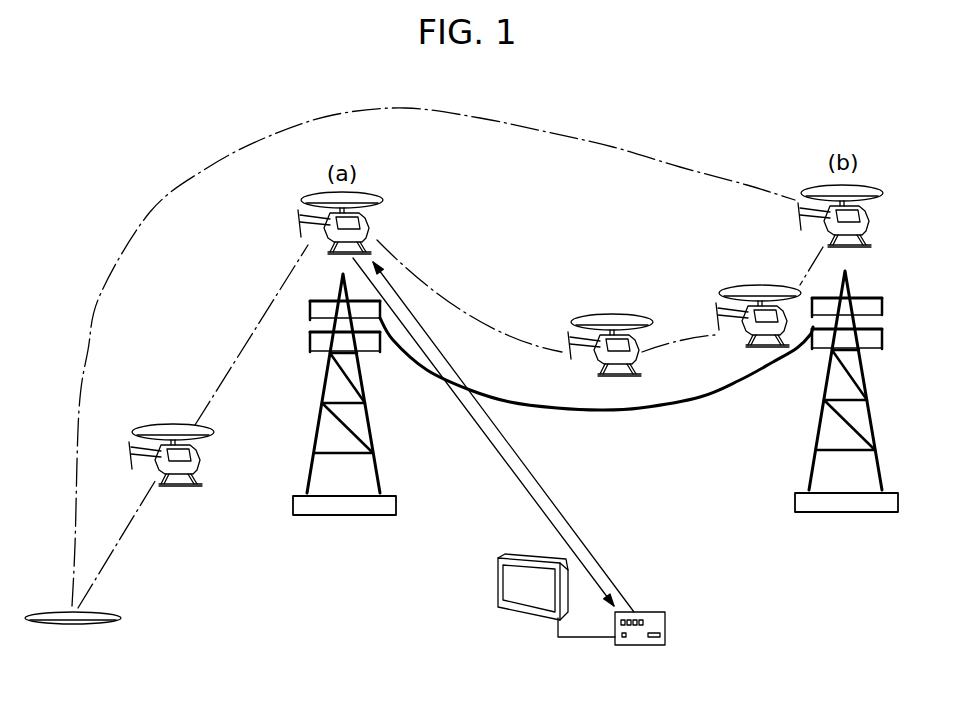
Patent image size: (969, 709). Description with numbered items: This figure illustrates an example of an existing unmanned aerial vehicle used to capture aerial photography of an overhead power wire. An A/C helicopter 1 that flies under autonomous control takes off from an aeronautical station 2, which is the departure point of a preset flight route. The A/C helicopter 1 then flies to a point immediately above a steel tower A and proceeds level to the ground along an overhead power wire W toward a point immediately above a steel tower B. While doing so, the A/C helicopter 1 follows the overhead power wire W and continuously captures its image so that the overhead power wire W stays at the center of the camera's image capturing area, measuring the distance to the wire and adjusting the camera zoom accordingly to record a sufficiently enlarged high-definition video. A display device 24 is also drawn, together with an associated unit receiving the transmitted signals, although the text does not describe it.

The A/C helicopter 1 is at (197, 458).
The aeronautical station 2 is at (122, 619).
The display device 24 is at (513, 612).
The overhead power wire W is at (700, 398).
The steel tower A is at (344, 412).
The steel tower B is at (846, 409).